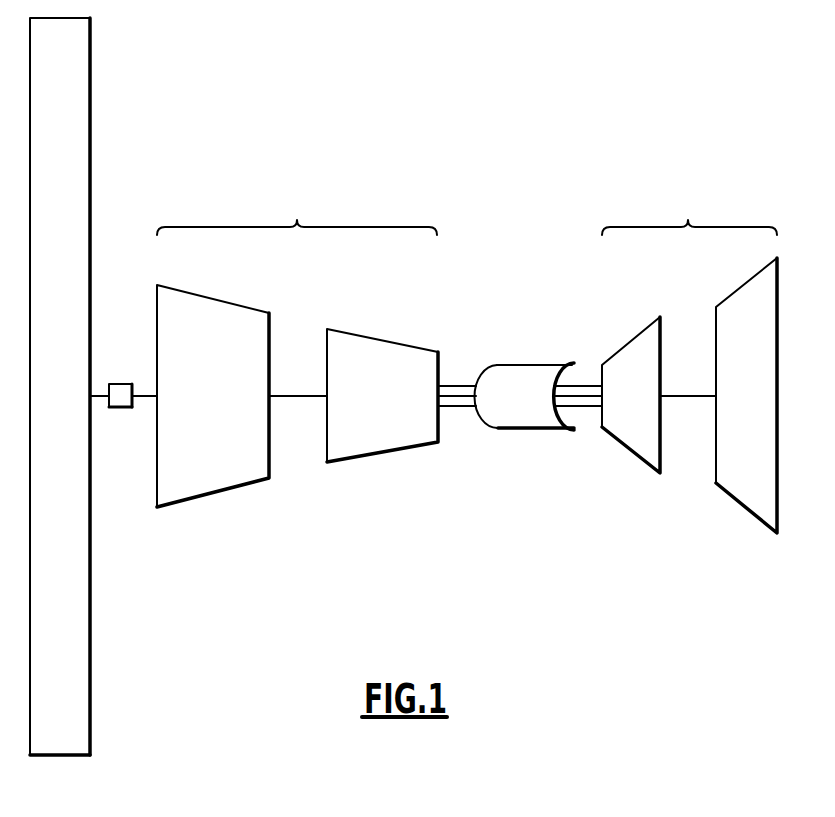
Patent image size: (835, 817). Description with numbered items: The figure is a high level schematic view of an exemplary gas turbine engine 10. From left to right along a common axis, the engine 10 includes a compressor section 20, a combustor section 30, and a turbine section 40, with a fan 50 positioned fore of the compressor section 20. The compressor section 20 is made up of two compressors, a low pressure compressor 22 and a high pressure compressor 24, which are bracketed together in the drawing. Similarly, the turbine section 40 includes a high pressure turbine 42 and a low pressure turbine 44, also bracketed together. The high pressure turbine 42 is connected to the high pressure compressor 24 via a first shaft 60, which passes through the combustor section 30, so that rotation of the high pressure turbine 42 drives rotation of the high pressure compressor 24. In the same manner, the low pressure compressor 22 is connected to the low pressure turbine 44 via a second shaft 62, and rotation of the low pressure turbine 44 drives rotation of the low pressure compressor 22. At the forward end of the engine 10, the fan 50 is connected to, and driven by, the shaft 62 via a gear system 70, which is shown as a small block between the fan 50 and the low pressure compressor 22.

The gas turbine engine 10 is at (527, 74).
The compressor section 20 is at (297, 212).
The low pressure compressor 22 is at (203, 497).
The high pressure compressor 24 is at (377, 457).
The combustor section 30 is at (521, 365).
The turbine section 40 is at (689, 212).
The high pressure turbine 42 is at (627, 448).
The low pressure turbine 44 is at (745, 510).
The fan 50 is at (90, 80).
The first shaft 60 is at (457, 406).
The second shaft 62 is at (293, 396).
The gear system 70 is at (118, 407).